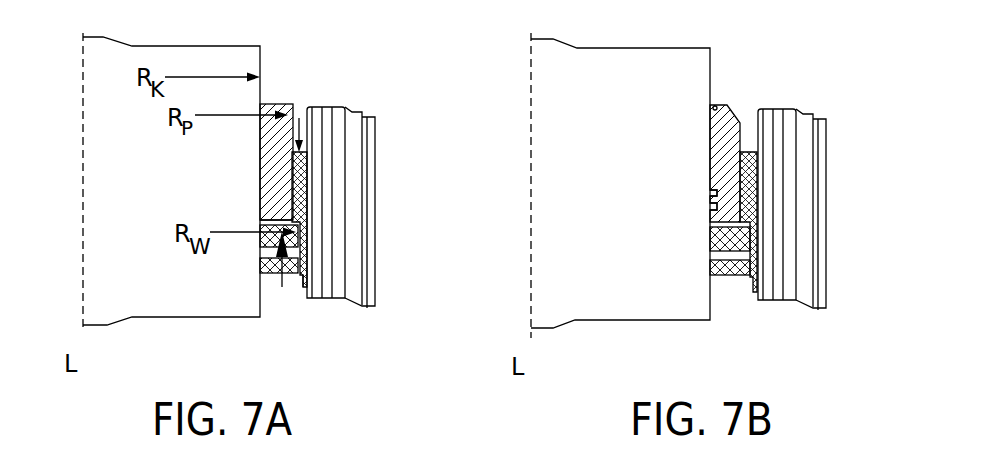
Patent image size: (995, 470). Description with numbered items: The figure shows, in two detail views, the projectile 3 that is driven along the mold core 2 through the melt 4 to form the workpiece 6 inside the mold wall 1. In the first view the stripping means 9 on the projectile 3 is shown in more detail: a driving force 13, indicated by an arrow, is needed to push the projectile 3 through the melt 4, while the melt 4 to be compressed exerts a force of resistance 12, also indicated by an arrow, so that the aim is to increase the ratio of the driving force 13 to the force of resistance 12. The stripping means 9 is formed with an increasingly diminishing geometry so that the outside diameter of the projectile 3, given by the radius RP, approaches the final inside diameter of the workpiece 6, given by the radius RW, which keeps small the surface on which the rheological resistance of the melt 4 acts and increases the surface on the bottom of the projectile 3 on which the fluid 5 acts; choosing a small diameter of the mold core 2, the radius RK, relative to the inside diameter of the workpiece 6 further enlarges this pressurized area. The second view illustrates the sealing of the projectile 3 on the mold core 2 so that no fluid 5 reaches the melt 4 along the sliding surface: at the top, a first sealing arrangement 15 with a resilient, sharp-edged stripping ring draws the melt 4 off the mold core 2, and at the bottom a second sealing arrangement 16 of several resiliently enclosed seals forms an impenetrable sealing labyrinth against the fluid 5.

In FIG. 7A, the mold wall 1 is at (352, 122).
In FIG. 7B, the mold wall 1 is at (808, 131).
In FIG. 7A, the mold core 2 is at (135, 283).
In FIG. 7B, the mold core 2 is at (585, 289).
In FIG. 7A, the projectile 3 is at (282, 147).
In FIG. 7B, the projectile 3 is at (718, 155).
In FIG. 7A, the melt 4 is at (303, 195).
In FIG. 7B, the melt 4 is at (748, 204).
In FIG. 7A, the fluid 5 is at (264, 246).
In FIG. 7B, the fluid 5 is at (713, 241).
In FIG. 7A, the workpiece 6 is at (302, 289).
In FIG. 7A, the stripping means 9 is at (295, 217).
In FIG. 7A, the force of resistance 12 is at (294, 143).
In FIG. 7A, the driving force 13 is at (280, 286).
In FIG. 7B, the first sealing arrangement 15 is at (699, 107).
In FIG. 7B, the second sealing arrangement 16 is at (699, 206).